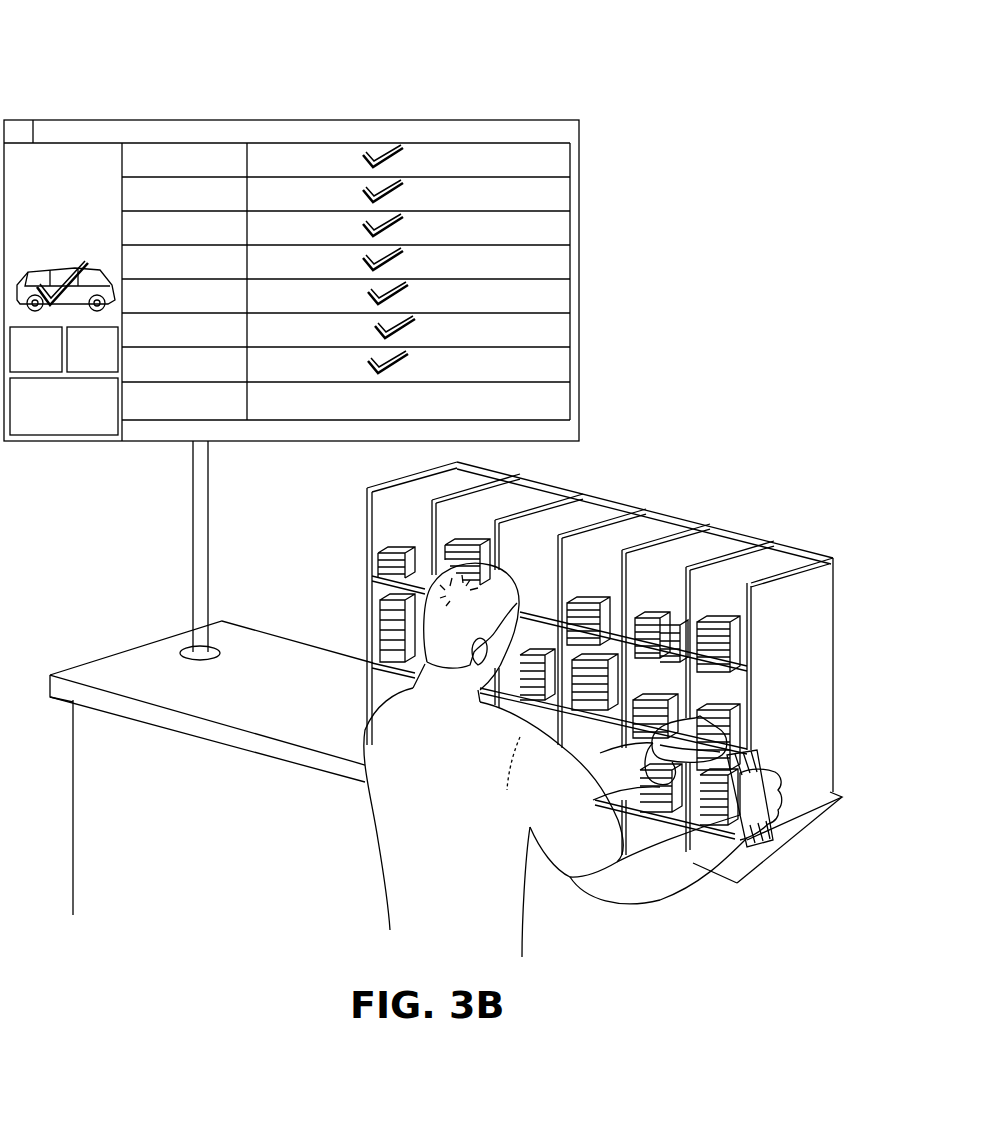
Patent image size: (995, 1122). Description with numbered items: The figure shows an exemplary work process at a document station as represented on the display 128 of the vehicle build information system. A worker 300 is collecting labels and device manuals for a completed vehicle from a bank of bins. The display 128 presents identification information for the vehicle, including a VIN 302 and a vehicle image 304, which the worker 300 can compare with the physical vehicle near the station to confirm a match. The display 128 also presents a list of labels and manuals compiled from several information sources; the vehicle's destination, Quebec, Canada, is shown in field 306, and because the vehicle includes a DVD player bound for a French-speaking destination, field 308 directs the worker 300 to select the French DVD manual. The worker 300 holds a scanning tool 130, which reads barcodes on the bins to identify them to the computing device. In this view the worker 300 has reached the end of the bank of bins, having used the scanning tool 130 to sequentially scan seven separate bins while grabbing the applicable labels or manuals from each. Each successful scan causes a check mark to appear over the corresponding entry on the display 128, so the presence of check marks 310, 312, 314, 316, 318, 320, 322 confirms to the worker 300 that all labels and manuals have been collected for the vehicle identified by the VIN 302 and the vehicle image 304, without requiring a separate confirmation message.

The display 128 is at (325, 120).
The VIN 302 is at (97, 143).
The vehicle image 304 is at (50, 310).
The field 306 is at (572, 402).
The field 308 is at (572, 265).
The check mark 310 is at (403, 150).
The check mark 312 is at (403, 185).
The check mark 314 is at (403, 219).
The check mark 316 is at (403, 253).
The check mark 318 is at (408, 287).
The check mark 320 is at (415, 321).
The check mark 322 is at (408, 356).
The scanning tool 130 is at (697, 733).
The worker 300 is at (405, 888).